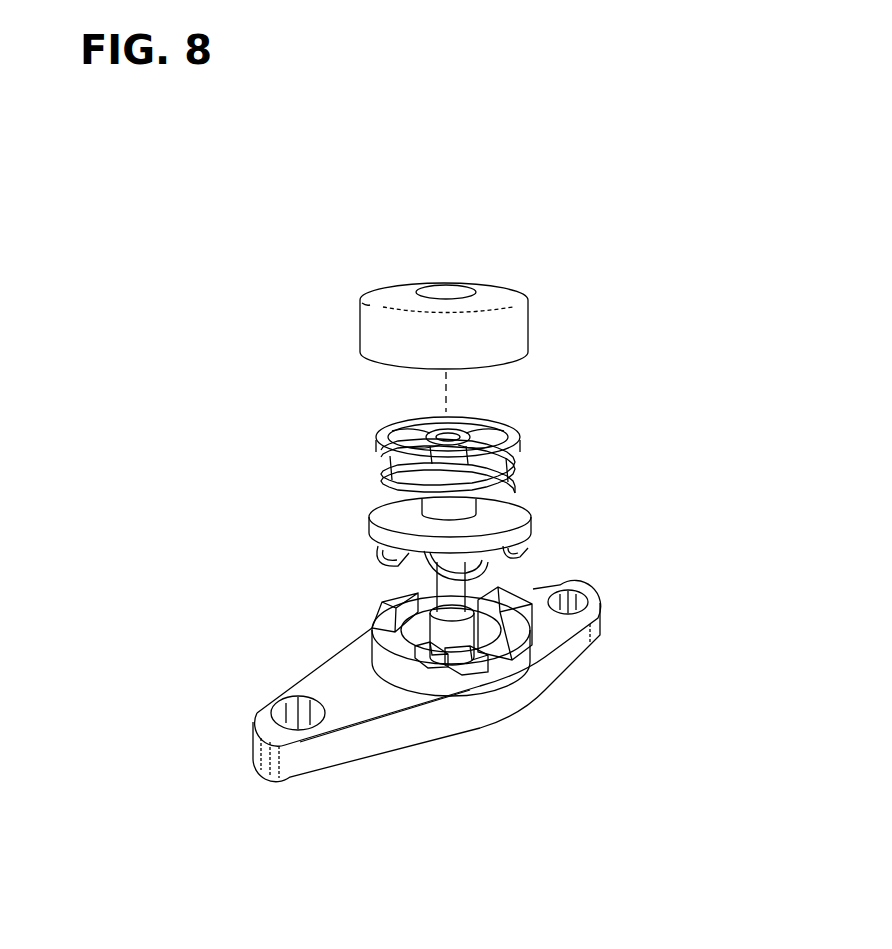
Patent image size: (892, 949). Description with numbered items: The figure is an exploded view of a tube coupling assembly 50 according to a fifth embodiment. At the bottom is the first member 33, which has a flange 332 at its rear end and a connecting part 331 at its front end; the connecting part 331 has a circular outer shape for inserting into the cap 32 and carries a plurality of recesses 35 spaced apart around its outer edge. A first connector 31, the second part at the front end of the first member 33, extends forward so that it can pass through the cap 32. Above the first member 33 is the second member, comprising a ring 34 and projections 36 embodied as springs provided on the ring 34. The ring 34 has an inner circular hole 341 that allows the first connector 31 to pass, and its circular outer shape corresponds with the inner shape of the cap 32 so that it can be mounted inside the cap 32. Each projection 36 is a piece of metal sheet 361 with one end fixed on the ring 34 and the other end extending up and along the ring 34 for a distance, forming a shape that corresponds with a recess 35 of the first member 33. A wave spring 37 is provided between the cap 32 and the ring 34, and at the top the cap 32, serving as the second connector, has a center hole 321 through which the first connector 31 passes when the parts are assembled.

The tube coupling assembly 50 is at (284, 389).
The cap 32 is at (477, 309).
The center hole 321 is at (450, 291).
The wave spring 37 is at (507, 452).
The ring 34 is at (447, 514).
The inner circular hole 341 is at (457, 513).
The projections 36 is at (428, 548).
The metal sheet 361 is at (378, 548).
The first connector 31 is at (445, 586).
The first member 33 is at (333, 666).
The connecting part 331 is at (497, 662).
The flange 332 is at (352, 704).
The recesses 35 is at (518, 636).